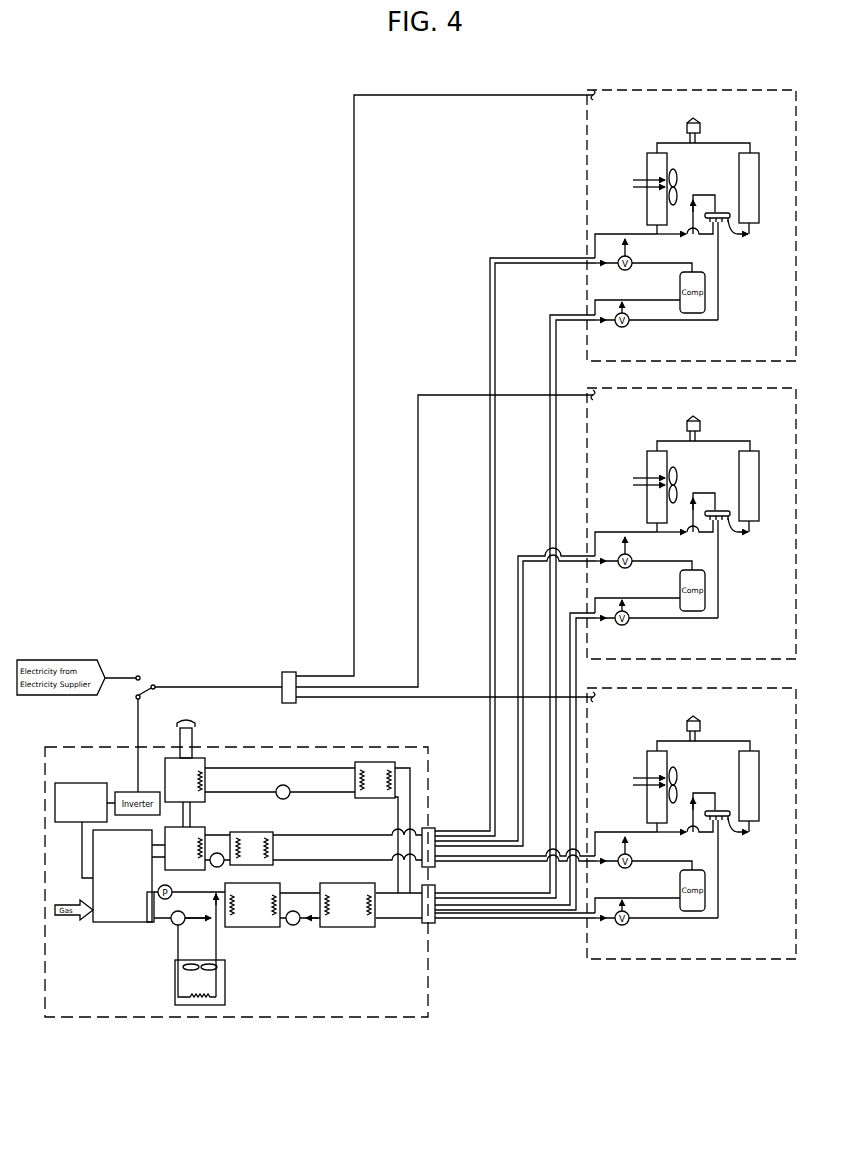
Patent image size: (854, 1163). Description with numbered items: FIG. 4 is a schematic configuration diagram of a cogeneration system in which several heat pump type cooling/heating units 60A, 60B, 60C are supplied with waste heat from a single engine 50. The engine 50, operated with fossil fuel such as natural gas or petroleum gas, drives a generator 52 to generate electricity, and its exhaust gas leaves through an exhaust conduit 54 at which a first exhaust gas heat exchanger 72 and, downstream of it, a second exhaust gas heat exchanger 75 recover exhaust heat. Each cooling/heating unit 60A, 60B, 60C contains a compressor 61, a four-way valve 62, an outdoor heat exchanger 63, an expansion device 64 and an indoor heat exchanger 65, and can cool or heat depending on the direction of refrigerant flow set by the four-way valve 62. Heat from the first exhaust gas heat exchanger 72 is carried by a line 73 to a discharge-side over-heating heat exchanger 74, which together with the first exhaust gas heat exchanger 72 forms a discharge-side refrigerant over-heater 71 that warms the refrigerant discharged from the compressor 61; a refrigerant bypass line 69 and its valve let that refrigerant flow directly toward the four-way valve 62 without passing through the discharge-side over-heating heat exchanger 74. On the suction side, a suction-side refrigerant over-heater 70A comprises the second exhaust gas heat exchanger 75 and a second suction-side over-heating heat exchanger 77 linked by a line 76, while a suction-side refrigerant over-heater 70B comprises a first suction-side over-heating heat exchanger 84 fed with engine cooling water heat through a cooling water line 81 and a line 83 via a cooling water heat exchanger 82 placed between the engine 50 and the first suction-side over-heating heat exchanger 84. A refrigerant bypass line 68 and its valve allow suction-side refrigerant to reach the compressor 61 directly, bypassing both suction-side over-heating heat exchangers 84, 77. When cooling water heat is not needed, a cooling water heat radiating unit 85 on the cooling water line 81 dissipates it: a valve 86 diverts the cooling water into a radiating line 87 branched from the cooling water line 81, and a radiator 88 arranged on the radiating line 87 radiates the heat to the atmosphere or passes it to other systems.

The engine 50 is at (113, 922).
The generator 52 is at (92, 783).
The exhaust conduit 54 is at (180, 740).
The cooling/heating unit 60A is at (668, 946).
The cooling/heating unit 60B is at (668, 646).
The cooling/heating unit 60C is at (668, 348).
The compressor 61 is at (717, 598).
The four-way valve 62 is at (725, 556).
The outdoor heat exchanger 63 is at (655, 470).
The expansion device 64 is at (712, 428).
The indoor heat exchanger 65 is at (760, 487).
The refrigerant bypass line 68 is at (642, 620).
The refrigerant bypass line 69 is at (640, 553).
The suction-side refrigerant over-heater 70A is at (365, 762).
The suction-side refrigerant over-heater 70B is at (326, 940).
The discharge-side refrigerant over-heater 71 is at (318, 835).
The first exhaust gas heat exchanger 72 is at (198, 827).
The line 73 is at (222, 835).
The discharge-side over-heating heat exchanger 74 is at (258, 832).
The second exhaust gas heat exchanger 75 is at (200, 758).
The line 76 is at (280, 768).
The second suction-side over-heating heat exchanger 77 is at (387, 762).
The cooling water line 81 is at (150, 922).
The cooling water heat exchanger 82 is at (263, 927).
The line 83 is at (293, 926).
The first suction-side over-heating heat exchanger 84 is at (348, 927).
The cooling water heat radiating unit 85 is at (166, 985).
The valve 86 is at (182, 925).
The radiating line 87 is at (218, 938).
The radiator 88 is at (225, 990).